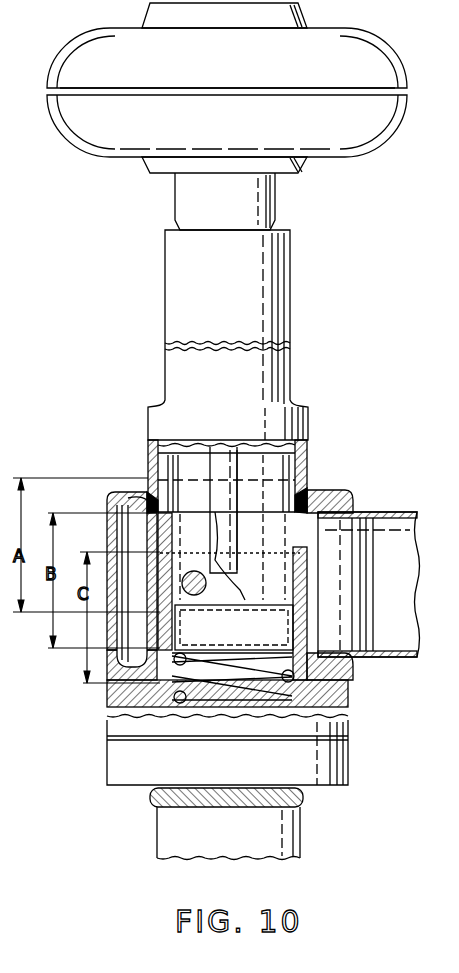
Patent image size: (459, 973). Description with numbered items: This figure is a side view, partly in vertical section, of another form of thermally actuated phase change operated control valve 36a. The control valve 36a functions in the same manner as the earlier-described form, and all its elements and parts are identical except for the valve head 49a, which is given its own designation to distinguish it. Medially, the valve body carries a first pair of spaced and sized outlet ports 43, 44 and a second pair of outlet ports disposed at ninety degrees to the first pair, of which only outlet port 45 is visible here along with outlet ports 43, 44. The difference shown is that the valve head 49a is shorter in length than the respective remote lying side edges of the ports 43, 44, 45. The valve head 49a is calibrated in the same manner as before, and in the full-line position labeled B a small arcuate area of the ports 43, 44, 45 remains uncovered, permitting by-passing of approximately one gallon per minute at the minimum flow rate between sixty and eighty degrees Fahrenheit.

The control valve 36a is at (313, 428).
The outlet port 43 is at (330, 518).
The outlet port 44 is at (147, 537).
The outlet port 45 is at (230, 575).
The valve head 49a is at (128, 510).